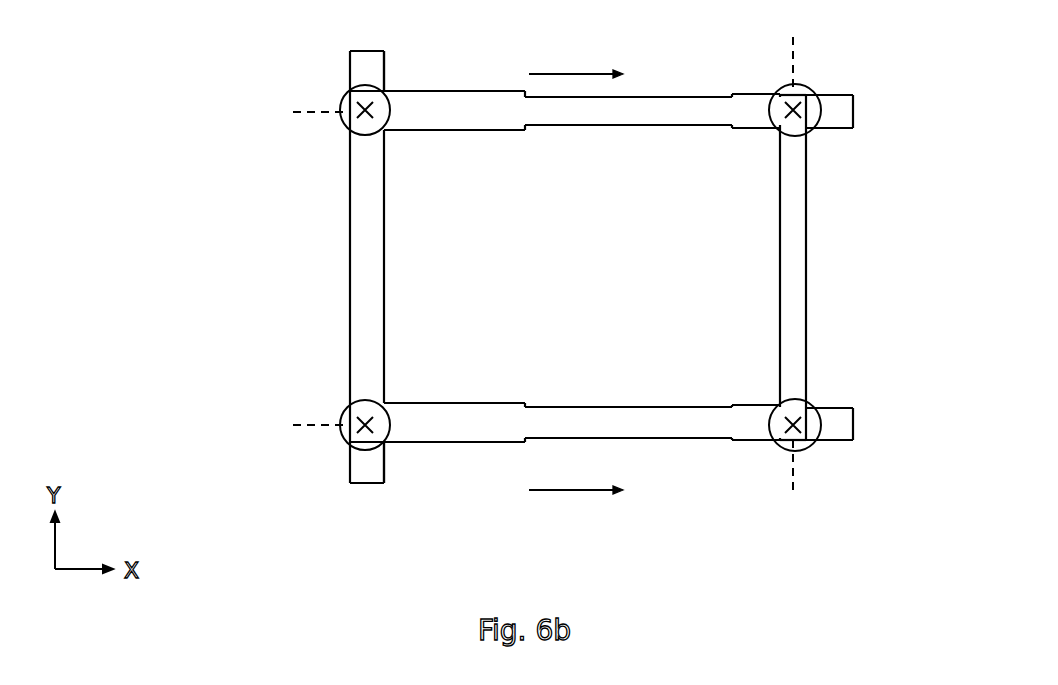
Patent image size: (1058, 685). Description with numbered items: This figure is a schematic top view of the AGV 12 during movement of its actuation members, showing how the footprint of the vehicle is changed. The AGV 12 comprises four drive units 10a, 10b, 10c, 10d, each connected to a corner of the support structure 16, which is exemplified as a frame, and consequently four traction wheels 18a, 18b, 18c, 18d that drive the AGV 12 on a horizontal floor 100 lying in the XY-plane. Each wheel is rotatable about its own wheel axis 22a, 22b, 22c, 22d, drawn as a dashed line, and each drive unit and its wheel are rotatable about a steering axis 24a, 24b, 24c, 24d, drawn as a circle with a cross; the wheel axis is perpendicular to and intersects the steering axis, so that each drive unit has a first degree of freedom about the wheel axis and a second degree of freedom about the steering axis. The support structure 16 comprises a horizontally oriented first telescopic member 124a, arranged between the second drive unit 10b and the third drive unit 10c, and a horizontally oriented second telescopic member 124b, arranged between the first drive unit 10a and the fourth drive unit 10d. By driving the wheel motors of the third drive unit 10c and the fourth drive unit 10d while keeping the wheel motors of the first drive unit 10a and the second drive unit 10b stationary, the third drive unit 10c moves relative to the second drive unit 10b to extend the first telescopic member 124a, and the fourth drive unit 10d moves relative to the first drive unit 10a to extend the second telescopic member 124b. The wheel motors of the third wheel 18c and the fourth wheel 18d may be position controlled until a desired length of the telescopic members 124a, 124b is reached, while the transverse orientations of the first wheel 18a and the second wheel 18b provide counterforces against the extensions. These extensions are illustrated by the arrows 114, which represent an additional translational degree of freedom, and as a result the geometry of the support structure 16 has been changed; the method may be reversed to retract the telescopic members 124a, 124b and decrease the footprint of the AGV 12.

The AGV 12 is at (218, 50).
The first drive unit 10a is at (301, 472).
The second drive unit 10b is at (300, 63).
The third drive unit 10c is at (876, 64).
The fourth drive unit 10d is at (860, 475).
The support structure 16 is at (367, 273).
The first wheel 18a is at (367, 465).
The second wheel 18b is at (367, 68).
The third wheel 18c is at (838, 110).
The fourth wheel 18d is at (840, 425).
The wheel axis 22a is at (317, 423).
The wheel axis 22b is at (312, 113).
The wheel axis 22c is at (792, 57).
The wheel axis 22d is at (793, 470).
The steering axis 24a is at (350, 403).
The steering axis 24b is at (347, 133).
The steering axis 24c is at (805, 85).
The steering axis 24d is at (805, 405).
The floor 100 is at (920, 276).
The arrows 114 is at (576, 268).
The first telescopic member 124a is at (662, 112).
The second telescopic member 124b is at (663, 420).